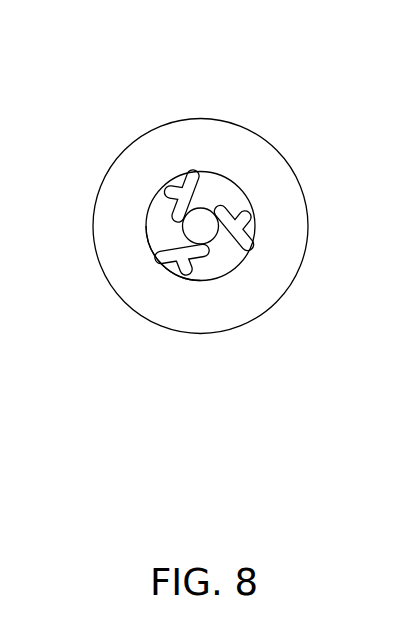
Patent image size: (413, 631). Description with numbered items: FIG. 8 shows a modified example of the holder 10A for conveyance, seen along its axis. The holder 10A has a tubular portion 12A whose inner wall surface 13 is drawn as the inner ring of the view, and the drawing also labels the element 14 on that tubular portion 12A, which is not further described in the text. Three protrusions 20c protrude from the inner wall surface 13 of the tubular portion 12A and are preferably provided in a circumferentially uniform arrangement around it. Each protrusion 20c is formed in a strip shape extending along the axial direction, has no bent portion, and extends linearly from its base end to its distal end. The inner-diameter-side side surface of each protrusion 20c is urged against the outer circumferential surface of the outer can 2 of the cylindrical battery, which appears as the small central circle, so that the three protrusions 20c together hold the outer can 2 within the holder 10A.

The holder for conveyance 10A is at (260, 92).
The tubular portion 12A is at (152, 125).
The inner wall surface 13 is at (166, 187).
The inner ring surface 14 is at (160, 236).
The protrusion 20c is at (150, 218).
The outer can 2 is at (213, 242).